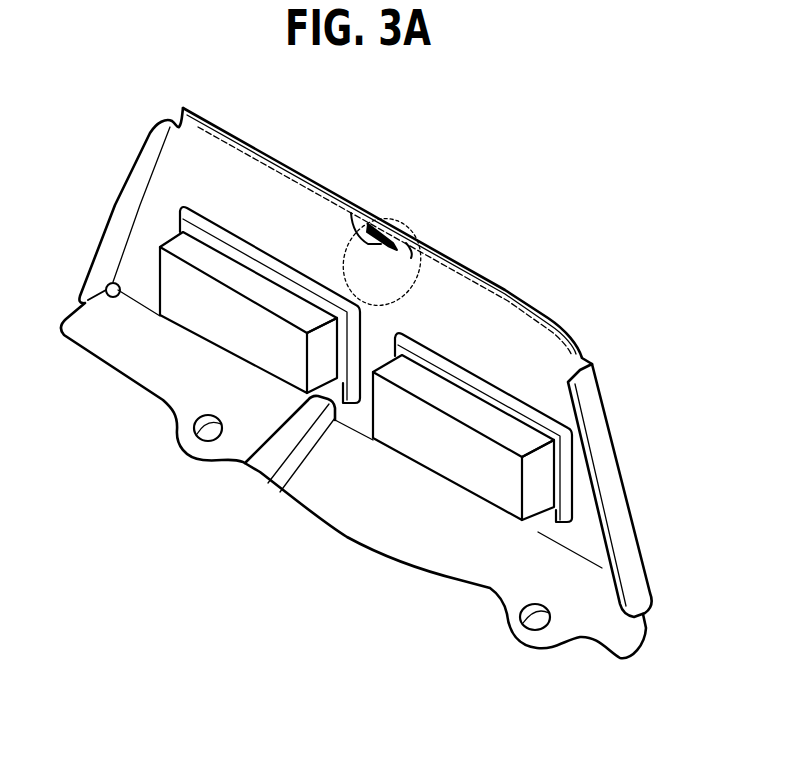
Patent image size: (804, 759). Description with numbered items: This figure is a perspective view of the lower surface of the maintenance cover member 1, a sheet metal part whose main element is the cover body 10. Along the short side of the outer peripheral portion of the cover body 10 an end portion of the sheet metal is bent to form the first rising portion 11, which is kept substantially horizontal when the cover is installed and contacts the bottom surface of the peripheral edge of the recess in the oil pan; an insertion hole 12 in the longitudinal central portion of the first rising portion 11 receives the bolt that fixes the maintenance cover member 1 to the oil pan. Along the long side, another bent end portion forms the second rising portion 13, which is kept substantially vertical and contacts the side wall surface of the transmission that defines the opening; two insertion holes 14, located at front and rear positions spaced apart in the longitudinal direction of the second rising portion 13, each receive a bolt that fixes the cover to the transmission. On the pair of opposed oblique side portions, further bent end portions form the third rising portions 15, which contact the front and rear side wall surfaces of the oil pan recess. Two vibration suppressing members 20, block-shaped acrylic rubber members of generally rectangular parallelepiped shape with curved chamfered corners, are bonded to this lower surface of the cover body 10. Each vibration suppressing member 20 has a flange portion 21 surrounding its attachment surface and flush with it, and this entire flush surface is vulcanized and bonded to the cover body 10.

The maintenance cover member 1 is at (523, 190).
The cover body 10 is at (540, 313).
The first rising portion 11 is at (279, 156).
The insertion hole 12 is at (362, 222).
The second rising portion 13 is at (365, 505).
The insertion holes 14 is at (204, 446).
The third rising portions 15 is at (130, 202).
The vibration suppressing members 20 is at (173, 287).
The flange portion 21 is at (268, 258).